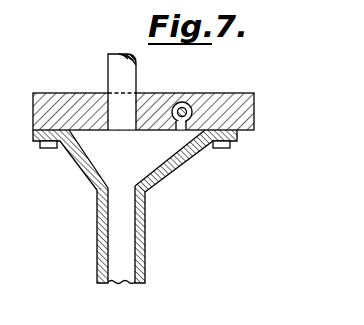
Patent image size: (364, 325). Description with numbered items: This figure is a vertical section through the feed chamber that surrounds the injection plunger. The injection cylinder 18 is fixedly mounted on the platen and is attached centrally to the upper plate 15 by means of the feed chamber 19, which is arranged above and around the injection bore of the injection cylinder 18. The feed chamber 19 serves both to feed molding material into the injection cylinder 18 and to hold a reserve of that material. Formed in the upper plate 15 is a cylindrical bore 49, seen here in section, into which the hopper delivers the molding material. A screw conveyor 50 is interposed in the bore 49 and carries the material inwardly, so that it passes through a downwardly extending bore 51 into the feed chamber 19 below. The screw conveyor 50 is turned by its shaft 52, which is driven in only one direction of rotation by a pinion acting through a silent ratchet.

The upper plate 15 is at (216, 93).
The injection cylinder 18 is at (97, 237).
The feed chamber 19 is at (93, 165).
The cylindrical bore 49 is at (184, 102).
The screw conveyor 50 is at (176, 123).
The downwardly extending bore 51 is at (184, 123).
The shaft 52 is at (174, 105).